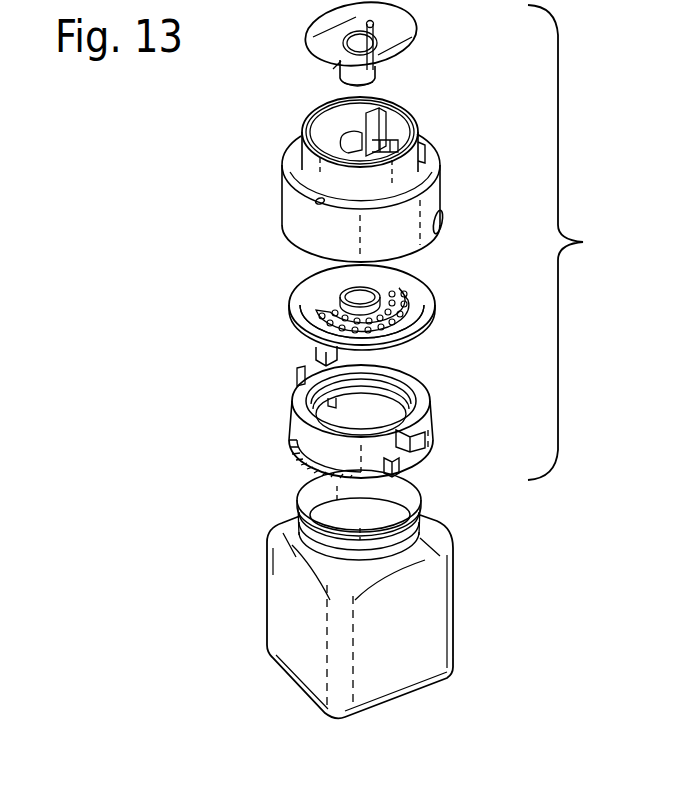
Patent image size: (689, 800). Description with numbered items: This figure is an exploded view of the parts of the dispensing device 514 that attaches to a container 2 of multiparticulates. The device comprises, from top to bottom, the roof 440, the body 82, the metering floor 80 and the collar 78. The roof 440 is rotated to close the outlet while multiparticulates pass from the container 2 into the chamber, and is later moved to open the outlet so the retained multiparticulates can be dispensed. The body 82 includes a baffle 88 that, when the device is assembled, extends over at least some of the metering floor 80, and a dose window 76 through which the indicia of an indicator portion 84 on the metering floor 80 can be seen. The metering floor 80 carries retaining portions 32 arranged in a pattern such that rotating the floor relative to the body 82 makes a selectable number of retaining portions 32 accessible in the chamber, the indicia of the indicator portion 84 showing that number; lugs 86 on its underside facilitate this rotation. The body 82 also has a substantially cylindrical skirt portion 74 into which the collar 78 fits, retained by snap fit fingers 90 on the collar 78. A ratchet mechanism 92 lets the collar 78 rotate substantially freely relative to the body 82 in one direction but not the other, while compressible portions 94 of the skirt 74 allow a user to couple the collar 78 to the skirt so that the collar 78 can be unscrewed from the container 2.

The roof 440 is at (326, 50).
The baffle 88 is at (325, 127).
The body 82 is at (317, 162).
The dose window 76 is at (320, 203).
The compressible portions 94 is at (420, 153).
The skirt portion 74 is at (435, 200).
The metering floor 80 is at (312, 292).
The retaining portions 32 is at (405, 292).
The indicator portion 84 is at (425, 320).
The lugs 86 is at (316, 353).
The collar 78 is at (306, 410).
The ratchet mechanism 92 is at (422, 437).
The snap fit fingers 90 is at (298, 455).
The container 2 is at (295, 615).
The dispensing device 514 is at (582, 242).